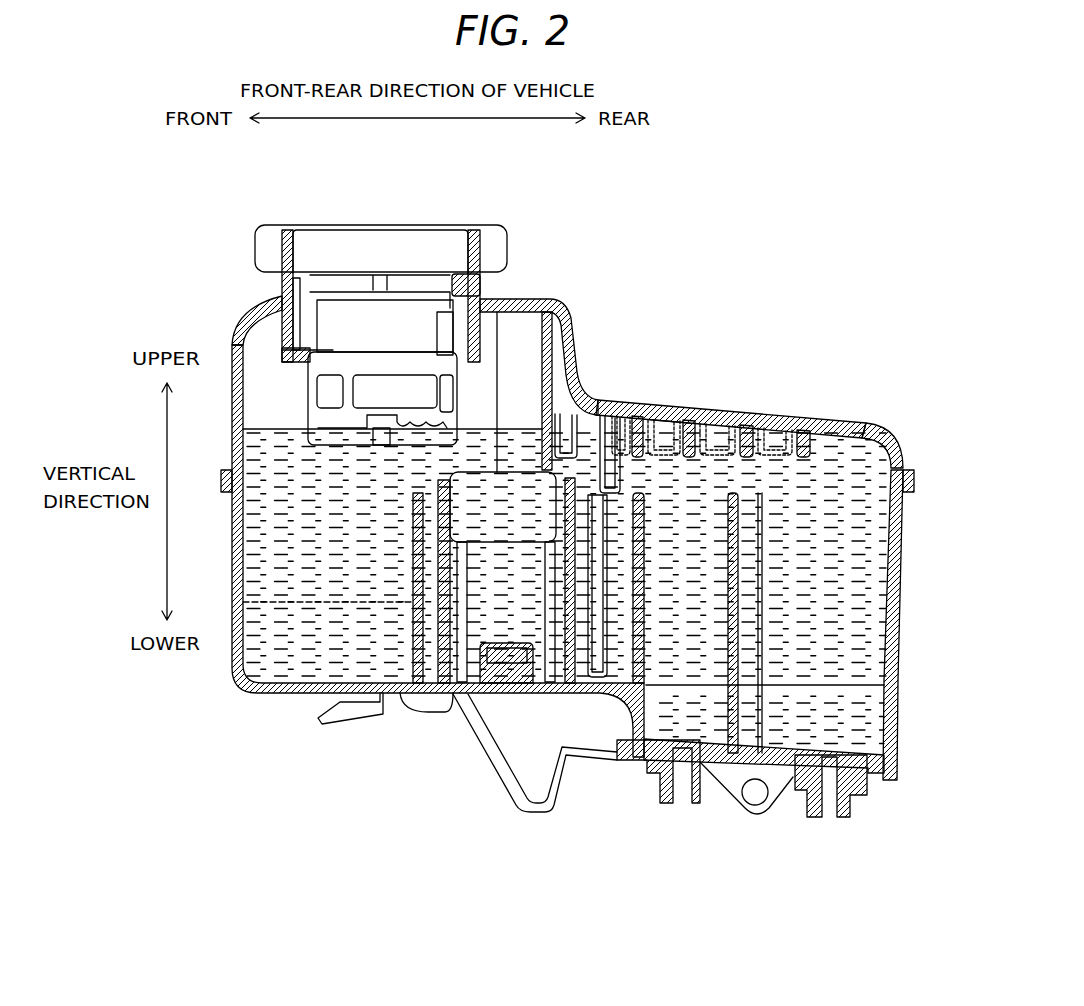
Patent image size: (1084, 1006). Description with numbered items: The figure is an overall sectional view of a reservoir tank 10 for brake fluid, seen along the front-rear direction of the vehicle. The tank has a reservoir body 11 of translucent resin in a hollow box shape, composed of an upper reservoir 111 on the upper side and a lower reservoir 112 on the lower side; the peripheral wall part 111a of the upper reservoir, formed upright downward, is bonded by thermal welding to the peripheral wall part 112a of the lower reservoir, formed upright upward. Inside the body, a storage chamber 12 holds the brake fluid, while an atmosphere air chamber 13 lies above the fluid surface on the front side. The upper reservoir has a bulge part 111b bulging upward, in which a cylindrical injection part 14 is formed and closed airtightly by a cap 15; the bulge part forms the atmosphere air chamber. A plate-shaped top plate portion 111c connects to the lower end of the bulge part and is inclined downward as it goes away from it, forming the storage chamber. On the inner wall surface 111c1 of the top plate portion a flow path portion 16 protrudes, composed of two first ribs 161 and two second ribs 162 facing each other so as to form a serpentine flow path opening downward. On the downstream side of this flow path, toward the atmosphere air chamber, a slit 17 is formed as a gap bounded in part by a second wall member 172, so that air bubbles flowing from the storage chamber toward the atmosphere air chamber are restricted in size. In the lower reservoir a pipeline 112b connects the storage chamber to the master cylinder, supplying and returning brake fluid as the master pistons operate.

The reservoir tank 10 is at (766, 176).
The reservoir body 11 is at (734, 301).
The upper reservoir 111 is at (779, 351).
The peripheral wall part 111a is at (905, 452).
The bulge part 111b is at (572, 337).
The top plate portion 111c is at (728, 411).
The inner wall surface 111c1 is at (672, 428).
The storage chamber 12 is at (892, 541).
The lower reservoir 112 is at (262, 694).
The peripheral wall part 112a is at (903, 608).
The pipeline 112b is at (677, 800).
The atmosphere air chamber 13 is at (262, 358).
The injection part 14 is at (481, 282).
The cap 15 is at (470, 226).
The flow path portion 16 is at (796, 510).
The first ribs 161 is at (641, 459).
The second ribs 162 is at (697, 460).
The slit 17 is at (626, 482).
The second wall member 172 is at (595, 470).